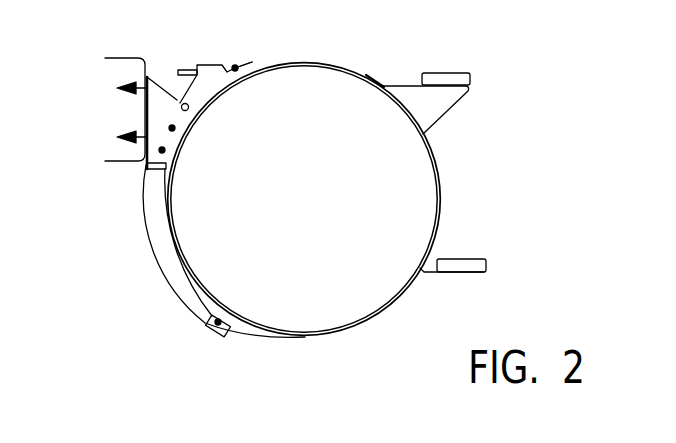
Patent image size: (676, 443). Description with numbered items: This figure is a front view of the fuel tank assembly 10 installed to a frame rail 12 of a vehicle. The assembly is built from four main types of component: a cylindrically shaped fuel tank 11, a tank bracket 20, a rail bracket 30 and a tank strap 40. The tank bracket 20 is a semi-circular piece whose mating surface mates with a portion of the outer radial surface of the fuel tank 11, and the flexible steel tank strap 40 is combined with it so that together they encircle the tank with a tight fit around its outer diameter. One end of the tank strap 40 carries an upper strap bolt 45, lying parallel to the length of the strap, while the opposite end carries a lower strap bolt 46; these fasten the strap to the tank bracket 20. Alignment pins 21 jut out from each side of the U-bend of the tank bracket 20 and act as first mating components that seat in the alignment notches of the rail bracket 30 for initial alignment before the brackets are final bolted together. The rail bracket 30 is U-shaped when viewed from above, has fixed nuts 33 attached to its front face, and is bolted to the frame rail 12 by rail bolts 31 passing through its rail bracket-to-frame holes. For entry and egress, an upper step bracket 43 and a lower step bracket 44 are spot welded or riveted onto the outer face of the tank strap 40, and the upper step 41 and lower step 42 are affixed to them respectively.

The fuel tank assembly 10 is at (411, 348).
The fuel tank 11 is at (318, 262).
The frame rail 12 is at (118, 54).
The tank bracket 20 is at (208, 60).
The alignment pin 21 is at (191, 101).
The rail bracket 30 is at (157, 100).
The rail bolt 31 is at (127, 127).
The fixed nut 33 is at (169, 152).
The tank strap 40 is at (251, 62).
The upper step 41 is at (442, 71).
The lower step 42 is at (468, 255).
The upper step bracket 43 is at (448, 122).
The lower step bracket 44 is at (426, 276).
The upper strap bolt 45 is at (186, 64).
The lower strap bolt 46 is at (210, 327).